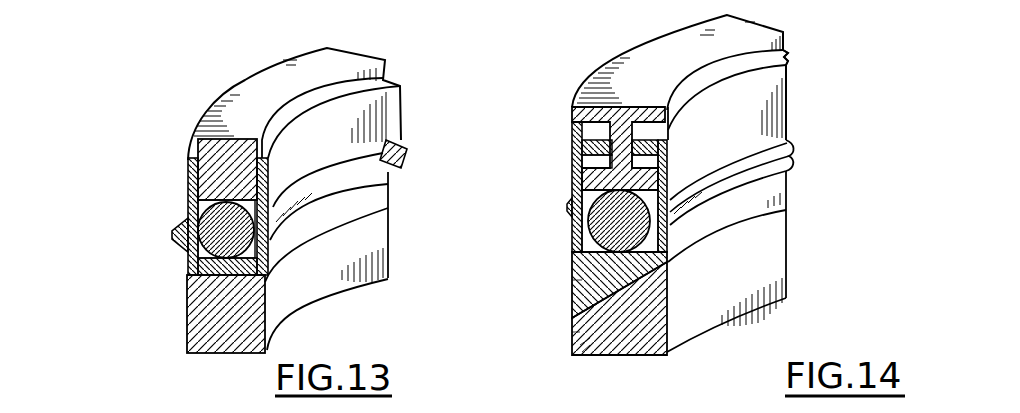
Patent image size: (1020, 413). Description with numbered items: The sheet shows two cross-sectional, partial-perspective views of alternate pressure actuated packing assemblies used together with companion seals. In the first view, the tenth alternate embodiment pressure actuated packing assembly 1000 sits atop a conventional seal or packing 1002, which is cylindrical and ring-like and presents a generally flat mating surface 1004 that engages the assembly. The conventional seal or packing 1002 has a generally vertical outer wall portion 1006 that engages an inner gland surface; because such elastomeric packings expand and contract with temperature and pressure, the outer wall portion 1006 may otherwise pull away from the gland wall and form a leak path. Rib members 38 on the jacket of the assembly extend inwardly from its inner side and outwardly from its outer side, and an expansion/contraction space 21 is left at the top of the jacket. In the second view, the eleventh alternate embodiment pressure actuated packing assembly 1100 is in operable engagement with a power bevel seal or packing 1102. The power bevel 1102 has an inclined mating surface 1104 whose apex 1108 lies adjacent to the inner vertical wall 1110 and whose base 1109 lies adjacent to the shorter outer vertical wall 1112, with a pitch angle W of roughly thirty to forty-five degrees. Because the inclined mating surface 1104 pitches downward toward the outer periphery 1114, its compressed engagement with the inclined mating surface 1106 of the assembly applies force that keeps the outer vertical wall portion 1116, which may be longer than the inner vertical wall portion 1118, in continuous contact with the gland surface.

In FIG. 13, the tenth alternate embodiment pressure actuated packing assembly 1000 is at (185, 105).
In FIG. 13, the conventional seal or packing 1002 is at (280, 298).
In FIG. 13, the generally flat mating surfaces 1004 is at (190, 268).
In FIG. 13, the generally vertical outer wall portion 1006 is at (190, 340).
In FIG. 13, the rib members 38 is at (172, 233).
In FIG. 14, the rib members 38 is at (568, 215).
In FIG. 13, the apex 1108 is at (357, 231).
In FIG. 14, the apex 1108 is at (723, 267).
In FIG. 14, the eleventh alternate embodiment pressure actuated packing assembly 1100 is at (580, 70).
In FIG. 14, the expansion/contraction space 21 is at (793, 56).
In FIG. 14, the inner vertical wall portion 1118 is at (753, 107).
In FIG. 14, the outer vertical wall portion 1116 is at (572, 167).
In FIG. 14, the inclined mating surface 1106 is at (573, 267).
In FIG. 14, the base 1109 is at (572, 280).
In FIG. 14, the pitch angle W is at (588, 318).
In FIG. 14, the outer vertical wall 1112 is at (572, 332).
In FIG. 14, the inclined mating surface 1104 is at (586, 340).
In FIG. 14, the outer periphery 1114 is at (586, 348).
In FIG. 14, the power bevel seal or packing 1102 is at (627, 353).
In FIG. 14, the inner vertical wall 1110 is at (787, 228).